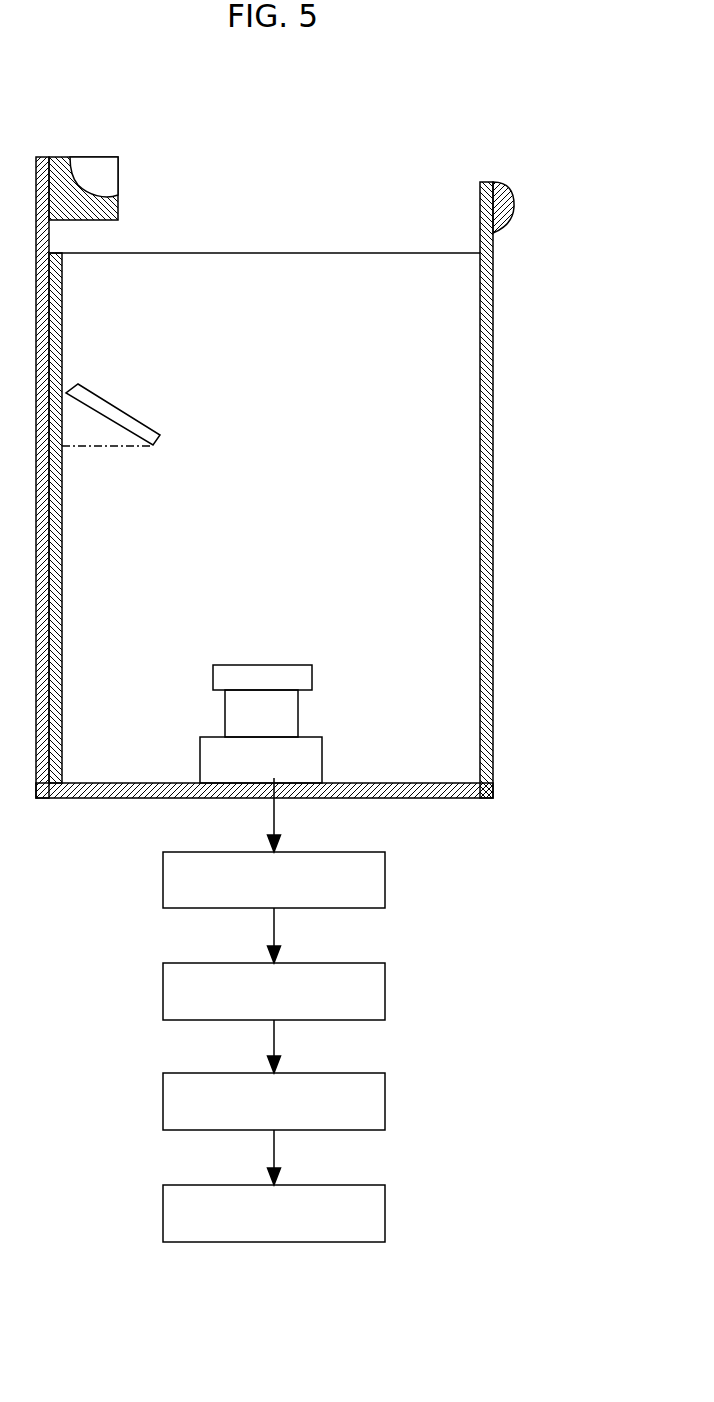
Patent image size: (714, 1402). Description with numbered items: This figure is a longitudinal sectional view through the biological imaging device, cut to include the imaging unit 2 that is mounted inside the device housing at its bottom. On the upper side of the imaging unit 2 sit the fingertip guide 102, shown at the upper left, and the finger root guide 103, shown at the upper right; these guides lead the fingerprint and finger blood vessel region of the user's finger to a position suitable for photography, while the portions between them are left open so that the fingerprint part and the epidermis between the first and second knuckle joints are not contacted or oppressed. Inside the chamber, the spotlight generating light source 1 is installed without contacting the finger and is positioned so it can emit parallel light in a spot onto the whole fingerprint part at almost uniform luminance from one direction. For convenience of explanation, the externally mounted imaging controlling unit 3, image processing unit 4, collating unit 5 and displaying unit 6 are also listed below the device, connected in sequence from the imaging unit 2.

The spotlight generating light source 1 is at (115, 427).
The imaging unit 2 is at (318, 748).
The imaging controlling unit 3 is at (274, 880).
The image processing unit 4 is at (274, 991).
The collating unit 5 is at (274, 1101).
The displaying unit 6 is at (274, 1213).
The fingertip guide 102 is at (83, 187).
The finger root guide 103 is at (487, 183).